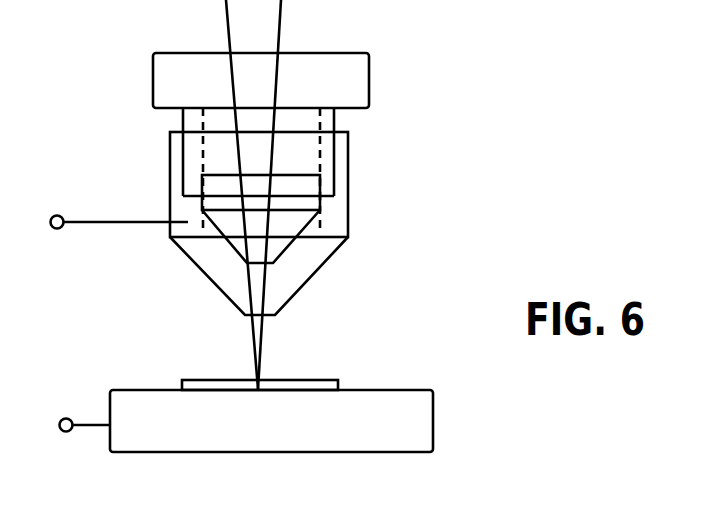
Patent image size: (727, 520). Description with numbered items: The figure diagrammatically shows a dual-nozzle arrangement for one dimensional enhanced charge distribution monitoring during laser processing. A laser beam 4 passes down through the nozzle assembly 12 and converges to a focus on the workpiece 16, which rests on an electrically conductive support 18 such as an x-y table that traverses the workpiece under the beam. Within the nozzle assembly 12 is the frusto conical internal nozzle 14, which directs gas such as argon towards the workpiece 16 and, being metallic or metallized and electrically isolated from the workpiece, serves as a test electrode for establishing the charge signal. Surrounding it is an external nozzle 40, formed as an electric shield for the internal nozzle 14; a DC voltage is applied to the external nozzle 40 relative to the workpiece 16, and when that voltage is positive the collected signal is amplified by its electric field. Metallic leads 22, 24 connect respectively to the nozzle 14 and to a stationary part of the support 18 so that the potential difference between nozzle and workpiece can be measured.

The laser beam 4 is at (245, 33).
The nozzle assembly 12 is at (336, 114).
The nozzle 14 is at (300, 233).
The external nozzle 40 is at (305, 283).
The workpiece 16 is at (338, 381).
The support 18 is at (433, 427).
The metallic lead 22 is at (105, 223).
The metallic lead 24 is at (90, 427).